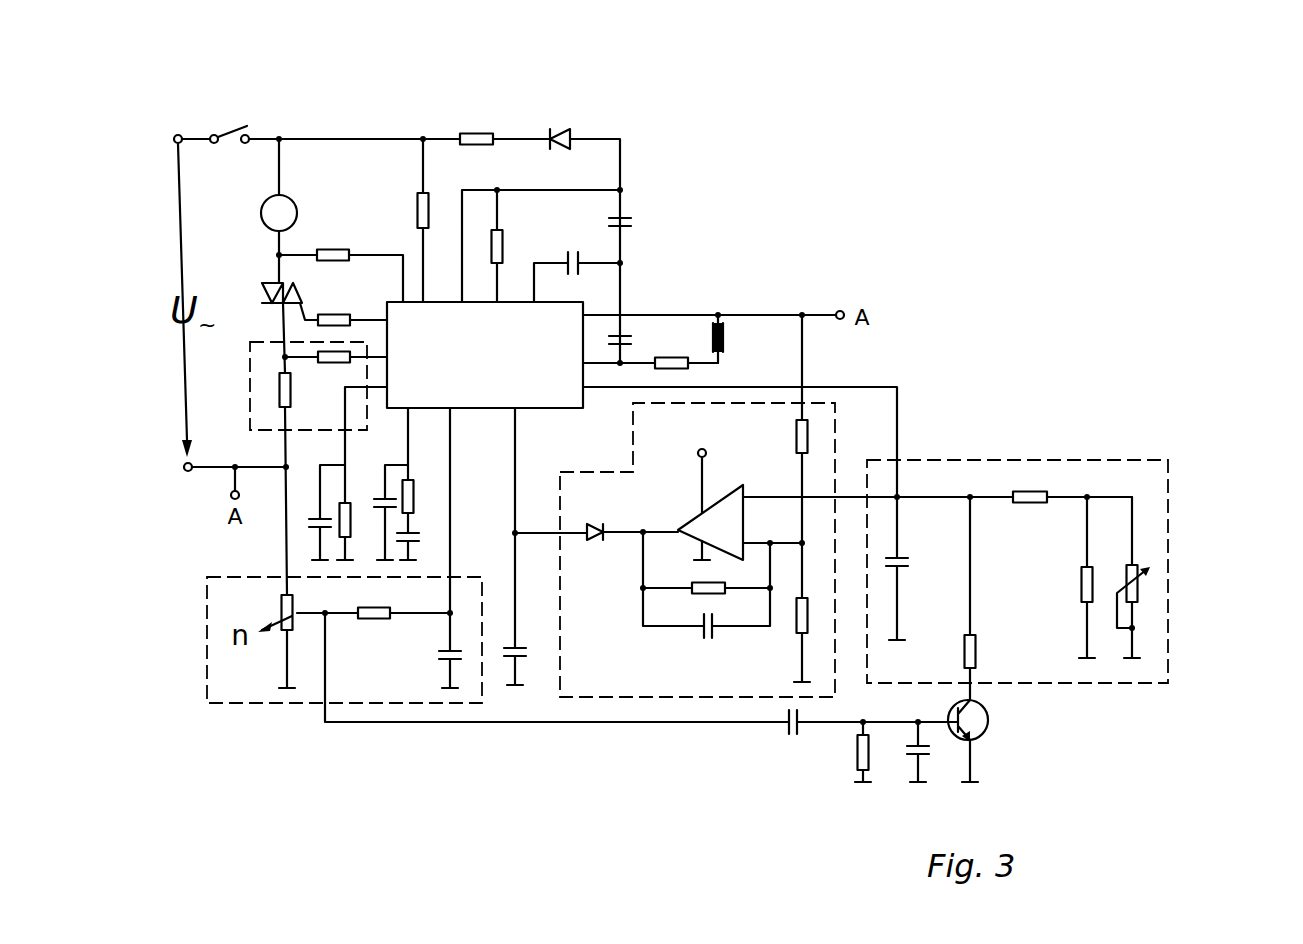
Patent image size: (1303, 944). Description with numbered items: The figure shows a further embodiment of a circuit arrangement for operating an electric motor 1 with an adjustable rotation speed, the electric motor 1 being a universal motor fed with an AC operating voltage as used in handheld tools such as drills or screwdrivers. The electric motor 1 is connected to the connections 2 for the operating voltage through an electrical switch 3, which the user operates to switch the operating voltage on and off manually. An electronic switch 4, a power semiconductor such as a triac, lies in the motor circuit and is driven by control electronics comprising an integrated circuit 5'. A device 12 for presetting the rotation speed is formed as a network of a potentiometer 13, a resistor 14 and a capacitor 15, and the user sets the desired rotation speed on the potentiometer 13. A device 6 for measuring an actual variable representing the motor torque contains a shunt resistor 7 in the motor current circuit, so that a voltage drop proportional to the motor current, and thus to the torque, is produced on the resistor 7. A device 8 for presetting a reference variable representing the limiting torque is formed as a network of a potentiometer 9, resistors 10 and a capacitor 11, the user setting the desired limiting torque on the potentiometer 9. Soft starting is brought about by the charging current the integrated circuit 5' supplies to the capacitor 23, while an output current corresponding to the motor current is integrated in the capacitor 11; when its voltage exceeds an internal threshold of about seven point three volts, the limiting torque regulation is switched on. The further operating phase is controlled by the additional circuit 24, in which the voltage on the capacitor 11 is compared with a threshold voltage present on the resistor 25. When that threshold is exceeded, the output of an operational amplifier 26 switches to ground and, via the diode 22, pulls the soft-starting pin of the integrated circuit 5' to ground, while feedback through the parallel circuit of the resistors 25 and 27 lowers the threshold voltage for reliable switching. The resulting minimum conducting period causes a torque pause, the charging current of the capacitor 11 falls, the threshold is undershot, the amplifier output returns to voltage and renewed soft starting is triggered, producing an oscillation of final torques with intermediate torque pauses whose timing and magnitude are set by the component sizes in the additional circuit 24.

The electric motor 1 is at (297, 206).
The connections 2 is at (175, 137).
The electrical switch 3 is at (233, 128).
The electronic switch 4 is at (270, 284).
The integrated circuit 5' is at (588, 293).
The device for measuring an actual variable 6 is at (250, 408).
The resistor 7 is at (277, 386).
The device for presetting a reference variable 8 is at (1170, 477).
The potentiometer 9 is at (1135, 592).
The resistors 10 is at (1032, 492).
The capacitor 11 is at (905, 558).
The device for presetting the rotation speed 12 is at (207, 673).
The potentiometer 13 is at (283, 612).
The resistor 14 is at (373, 613).
The capacitor 15 is at (443, 660).
The diode 22 is at (592, 536).
The capacitor 23 is at (510, 655).
The additional circuit 24 is at (635, 697).
The resistor 25 is at (805, 613).
The operational amplifier 26 is at (725, 530).
The resistor 27 is at (703, 594).